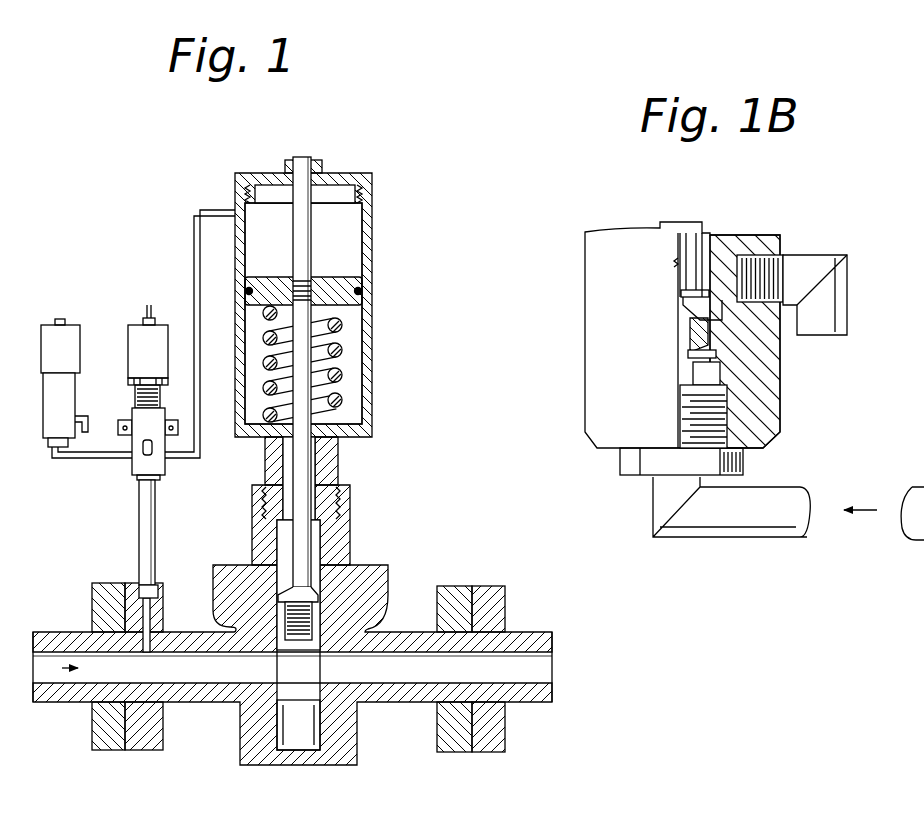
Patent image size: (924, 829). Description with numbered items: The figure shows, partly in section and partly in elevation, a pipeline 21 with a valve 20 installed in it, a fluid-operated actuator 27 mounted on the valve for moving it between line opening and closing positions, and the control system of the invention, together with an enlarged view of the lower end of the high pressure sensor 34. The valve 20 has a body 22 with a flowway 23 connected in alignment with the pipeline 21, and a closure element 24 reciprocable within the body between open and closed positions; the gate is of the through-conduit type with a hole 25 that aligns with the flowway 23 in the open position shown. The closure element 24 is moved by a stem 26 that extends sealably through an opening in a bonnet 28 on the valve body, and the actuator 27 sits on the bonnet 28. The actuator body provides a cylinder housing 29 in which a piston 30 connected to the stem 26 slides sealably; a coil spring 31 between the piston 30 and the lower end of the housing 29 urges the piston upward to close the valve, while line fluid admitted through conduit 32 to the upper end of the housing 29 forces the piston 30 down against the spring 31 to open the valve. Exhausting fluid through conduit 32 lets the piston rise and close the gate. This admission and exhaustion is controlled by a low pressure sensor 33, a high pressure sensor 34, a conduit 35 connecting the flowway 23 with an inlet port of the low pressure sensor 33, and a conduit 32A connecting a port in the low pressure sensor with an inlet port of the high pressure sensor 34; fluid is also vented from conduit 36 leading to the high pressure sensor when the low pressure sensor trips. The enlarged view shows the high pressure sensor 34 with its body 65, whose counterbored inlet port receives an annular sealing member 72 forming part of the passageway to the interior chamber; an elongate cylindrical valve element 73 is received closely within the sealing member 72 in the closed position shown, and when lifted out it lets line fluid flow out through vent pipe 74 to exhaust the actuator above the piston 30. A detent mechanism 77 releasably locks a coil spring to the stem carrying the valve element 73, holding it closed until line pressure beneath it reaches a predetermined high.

In FIG. 1, the valve 20 is at (392, 566).
In FIG. 1, the pipeline 21 is at (93, 584).
In FIG. 1, the body 22 is at (342, 766).
In FIG. 1, the flowway 23 is at (188, 675).
In FIG. 1, the closure element 24 is at (282, 722).
In FIG. 1, the hole 25 is at (317, 673).
In FIG. 1, the stem 26 is at (300, 362).
In FIG. 1, the actuator 27 is at (376, 210).
In FIG. 1, the bonnet 28 is at (350, 490).
In FIG. 1, the cylinder housing 29 is at (372, 232).
In FIG. 1, the piston 30 is at (346, 277).
In FIG. 1, the coil spring 31 is at (345, 322).
In FIG. 1, the conduit 32 is at (194, 222).
In FIG. 1B, the conduit 32 is at (912, 484).
In FIG. 1, the conduit 32A is at (97, 462).
In FIG. 1B, the conduit 32A is at (742, 538).
In FIG. 1, the low pressure sensor 33 is at (127, 322).
In FIG. 1, the high pressure sensor 34 is at (40, 322).
In FIG. 1B, the high pressure sensor 34 is at (745, 213).
In FIG. 1, the conduit 35 is at (139, 518).
In FIG. 1, the conduit 36 is at (152, 616).
In FIG. 1B, the body 65 is at (784, 410).
In FIG. 1B, the annular sealing member 72 is at (688, 337).
In FIG. 1B, the valve element 73 is at (690, 354).
In FIG. 1B, the vent pipe 74 is at (848, 278).
In FIG. 1B, the detent mechanism 77 is at (698, 304).